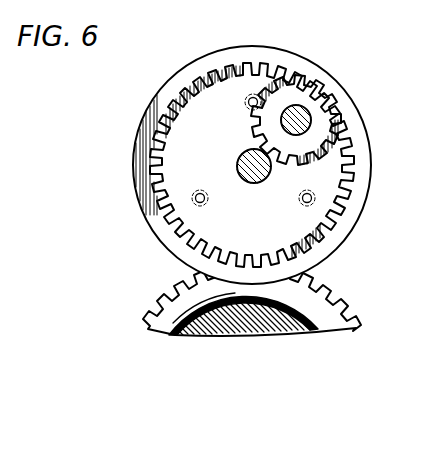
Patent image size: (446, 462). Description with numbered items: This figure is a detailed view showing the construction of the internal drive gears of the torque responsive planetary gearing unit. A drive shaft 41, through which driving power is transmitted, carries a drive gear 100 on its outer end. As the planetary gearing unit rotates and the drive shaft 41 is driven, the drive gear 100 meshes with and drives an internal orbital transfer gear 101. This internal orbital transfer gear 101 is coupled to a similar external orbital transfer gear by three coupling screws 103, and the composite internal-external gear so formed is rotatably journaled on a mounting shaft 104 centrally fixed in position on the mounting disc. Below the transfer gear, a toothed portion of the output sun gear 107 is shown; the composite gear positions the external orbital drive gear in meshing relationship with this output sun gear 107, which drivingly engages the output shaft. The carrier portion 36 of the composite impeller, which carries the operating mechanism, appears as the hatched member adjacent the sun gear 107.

The carrier portion 36 is at (243, 330).
The drive shaft 41 is at (313, 125).
The drive gear 100 is at (312, 102).
The internal orbital transfer gear 101 is at (368, 183).
The coupling screws 103 is at (207, 203).
The mounting shaft 104 is at (237, 166).
The output sun gear 107 is at (330, 304).